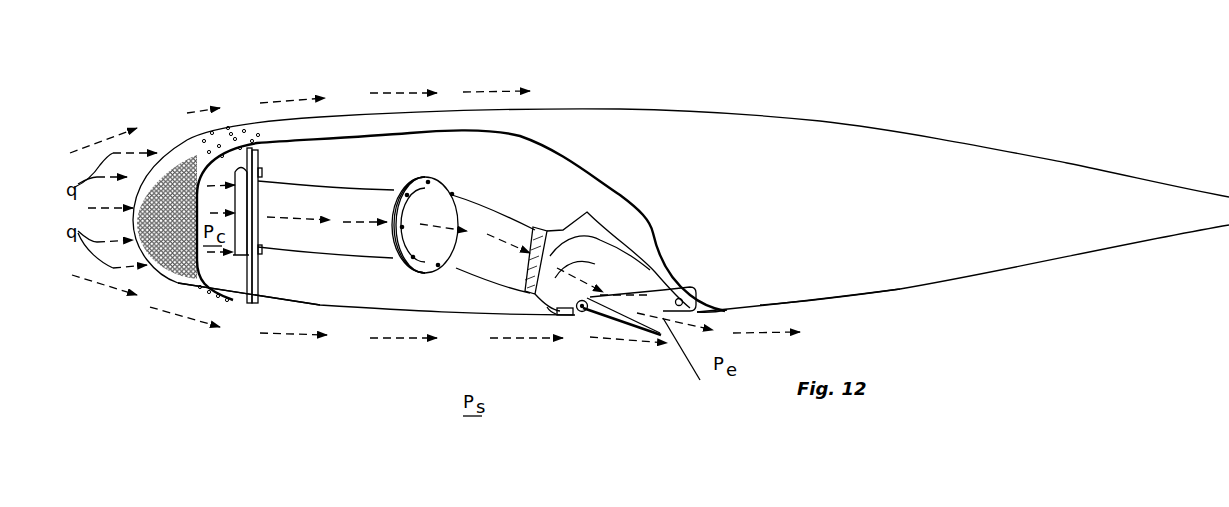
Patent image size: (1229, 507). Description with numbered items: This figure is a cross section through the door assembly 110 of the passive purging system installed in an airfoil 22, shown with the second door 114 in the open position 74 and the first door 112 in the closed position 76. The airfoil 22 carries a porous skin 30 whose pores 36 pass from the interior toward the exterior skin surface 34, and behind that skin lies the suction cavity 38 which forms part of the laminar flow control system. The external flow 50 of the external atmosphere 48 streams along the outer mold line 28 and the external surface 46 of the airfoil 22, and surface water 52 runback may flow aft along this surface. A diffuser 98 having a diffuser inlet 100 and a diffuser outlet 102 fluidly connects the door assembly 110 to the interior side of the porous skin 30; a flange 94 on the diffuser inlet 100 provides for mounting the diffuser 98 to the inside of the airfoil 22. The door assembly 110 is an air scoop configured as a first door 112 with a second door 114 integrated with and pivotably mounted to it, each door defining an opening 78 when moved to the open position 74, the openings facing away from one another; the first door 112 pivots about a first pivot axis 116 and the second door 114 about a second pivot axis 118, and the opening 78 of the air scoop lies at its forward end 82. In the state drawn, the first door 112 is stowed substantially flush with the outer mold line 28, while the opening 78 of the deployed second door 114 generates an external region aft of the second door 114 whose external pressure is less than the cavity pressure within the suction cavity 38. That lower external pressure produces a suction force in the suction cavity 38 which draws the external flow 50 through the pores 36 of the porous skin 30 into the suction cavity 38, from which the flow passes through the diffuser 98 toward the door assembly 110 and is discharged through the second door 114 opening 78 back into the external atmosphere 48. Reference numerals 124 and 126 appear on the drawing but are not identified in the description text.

The airfoil 22 is at (613, 108).
The outer mold line 28 is at (352, 115).
The porous skin 30 is at (132, 269).
The exterior skin surface 34 is at (132, 269).
The pores 36 is at (163, 275).
The suction cavity 38 is at (233, 305).
The external surface 46 is at (773, 306).
The external atmosphere 48 is at (182, 63).
The external flow 50 is at (107, 140).
The surface water 52 is at (193, 137).
The open position 74 is at (727, 311).
The closed position 76 is at (562, 318).
The opening 78 is at (673, 318).
The forward end 82 is at (547, 312).
The flange 94 is at (258, 252).
The diffuser 98 is at (487, 203).
The diffuser inlet 100 is at (637, 244).
The diffuser outlet 102 is at (252, 155).
The door assembly 110 is at (614, 352).
The first door 112 is at (586, 210).
The second door 114 is at (677, 333).
The first pivot axis 116 is at (683, 288).
The second pivot axis 118 is at (581, 313).
The inner duct wall 124 is at (658, 254).
The inner duct wall 126 is at (650, 264).